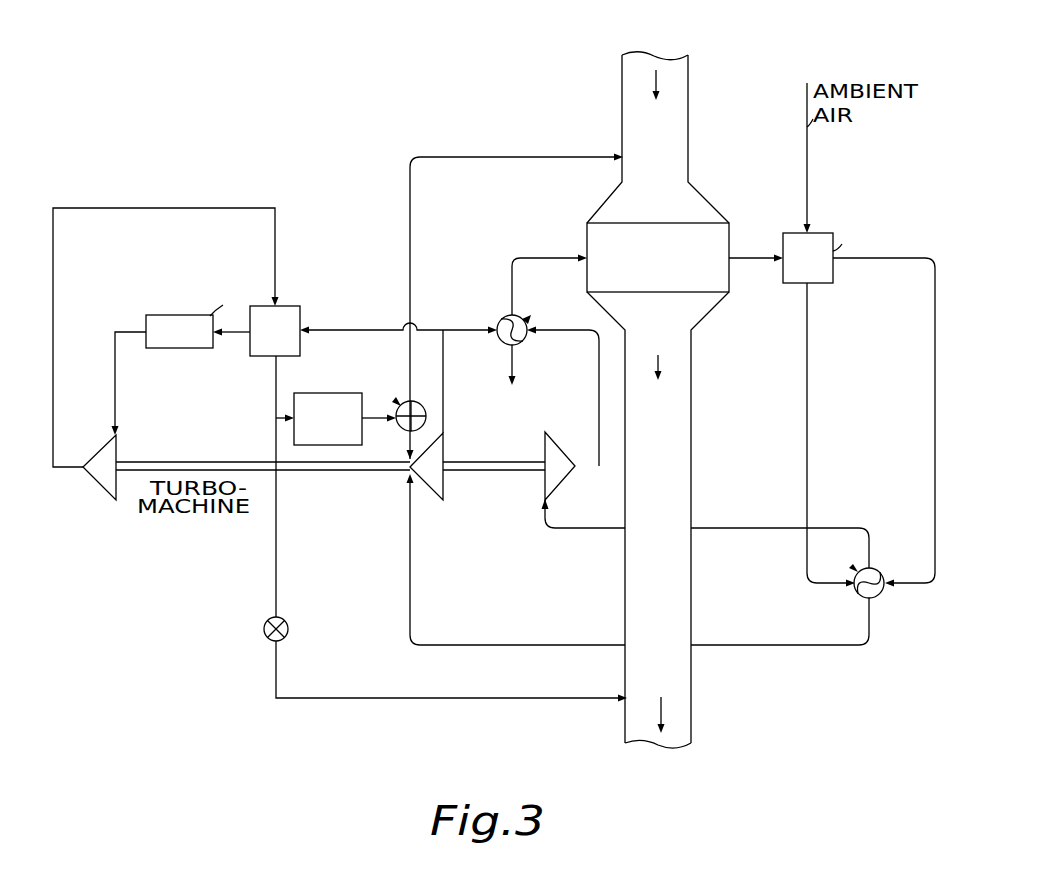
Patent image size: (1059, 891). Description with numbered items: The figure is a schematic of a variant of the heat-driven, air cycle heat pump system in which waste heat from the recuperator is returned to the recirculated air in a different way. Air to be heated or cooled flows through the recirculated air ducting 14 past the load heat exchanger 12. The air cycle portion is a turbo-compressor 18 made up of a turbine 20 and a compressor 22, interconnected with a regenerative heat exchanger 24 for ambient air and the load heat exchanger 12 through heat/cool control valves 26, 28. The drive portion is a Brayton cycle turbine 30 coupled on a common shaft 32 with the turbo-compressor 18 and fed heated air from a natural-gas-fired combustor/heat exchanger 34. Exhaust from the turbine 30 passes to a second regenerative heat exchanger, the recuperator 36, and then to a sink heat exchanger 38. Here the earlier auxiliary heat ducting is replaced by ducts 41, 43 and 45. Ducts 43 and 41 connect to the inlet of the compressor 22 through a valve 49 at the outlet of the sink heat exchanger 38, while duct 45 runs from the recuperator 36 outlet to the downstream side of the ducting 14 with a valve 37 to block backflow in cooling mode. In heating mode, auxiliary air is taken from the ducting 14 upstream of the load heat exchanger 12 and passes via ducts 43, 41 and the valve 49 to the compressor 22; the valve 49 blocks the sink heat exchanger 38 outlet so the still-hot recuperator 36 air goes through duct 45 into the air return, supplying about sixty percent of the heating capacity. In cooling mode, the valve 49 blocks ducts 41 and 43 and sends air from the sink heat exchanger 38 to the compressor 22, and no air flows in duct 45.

The load heat exchanger 12 is at (730, 225).
The ducting 14 is at (690, 115).
The turbo-compressor 18 is at (563, 502).
The turbine 20 is at (570, 444).
The compressor 22 is at (445, 451).
The regenerative heat exchanger 24 is at (834, 277).
The heat/cool control valve 26 is at (507, 317).
The heat/cool control valve 28 is at (882, 597).
The Brayton cycle turbine 30 is at (108, 491).
The common shaft 32 is at (229, 464).
The combustor/heat exchanger 34 is at (183, 349).
The second regenerative heat exchanger 36 is at (301, 319).
The valve 37 is at (288, 618).
The sink heat exchanger 38 is at (336, 392).
The duct 41 is at (411, 236).
The duct 43 is at (498, 155).
The duct 45 is at (502, 700).
The valve 49 is at (400, 403).